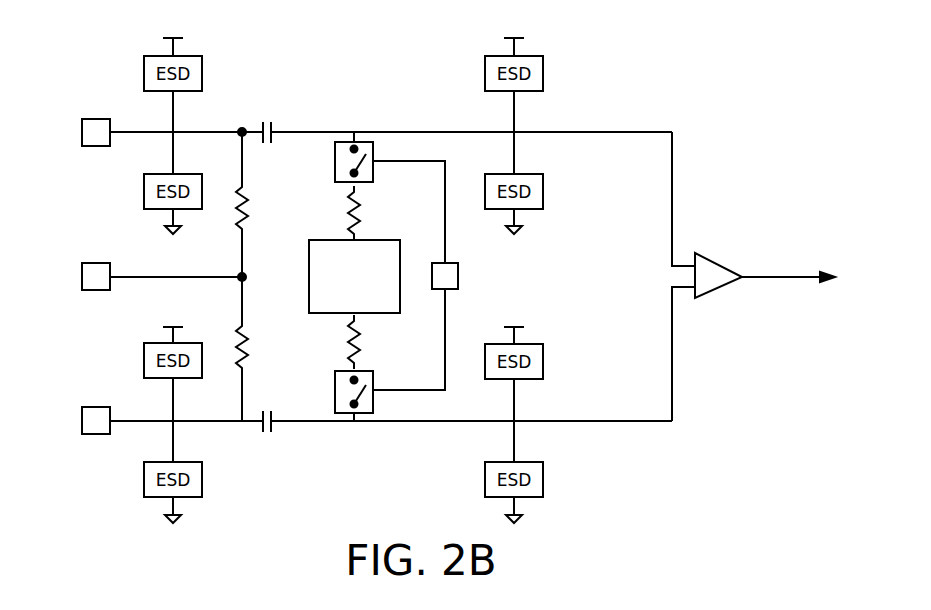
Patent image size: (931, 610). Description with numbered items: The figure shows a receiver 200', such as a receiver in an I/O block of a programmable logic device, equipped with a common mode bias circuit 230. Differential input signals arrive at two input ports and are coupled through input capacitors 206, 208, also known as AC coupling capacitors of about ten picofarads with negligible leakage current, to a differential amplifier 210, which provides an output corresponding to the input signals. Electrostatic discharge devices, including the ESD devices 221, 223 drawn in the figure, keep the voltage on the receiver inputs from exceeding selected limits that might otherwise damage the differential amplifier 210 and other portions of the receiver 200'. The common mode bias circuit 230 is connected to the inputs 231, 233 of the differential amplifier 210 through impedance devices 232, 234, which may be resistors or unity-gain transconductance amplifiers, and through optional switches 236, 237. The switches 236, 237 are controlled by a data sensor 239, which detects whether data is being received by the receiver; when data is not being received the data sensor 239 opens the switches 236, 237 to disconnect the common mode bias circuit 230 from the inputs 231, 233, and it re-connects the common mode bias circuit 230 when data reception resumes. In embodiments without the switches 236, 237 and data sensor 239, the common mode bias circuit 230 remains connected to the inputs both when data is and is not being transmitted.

The receiver 200' is at (425, 266).
The input capacitor 206 is at (272, 127).
The input capacitor 208 is at (272, 428).
The differential amplifier 210 is at (722, 263).
The electrostatic discharge device 221 is at (544, 72).
The electrostatic discharge device 223 is at (544, 194).
The common mode bias circuit 230 is at (308, 258).
The input of the differential amplifier 231 is at (695, 291).
The impedance device 232 is at (361, 331).
The input of the differential amplifier 233 is at (695, 262).
The impedance device 234 is at (361, 211).
The switch 236 is at (374, 147).
The switch 237 is at (374, 404).
The data sensor 239 is at (459, 277).